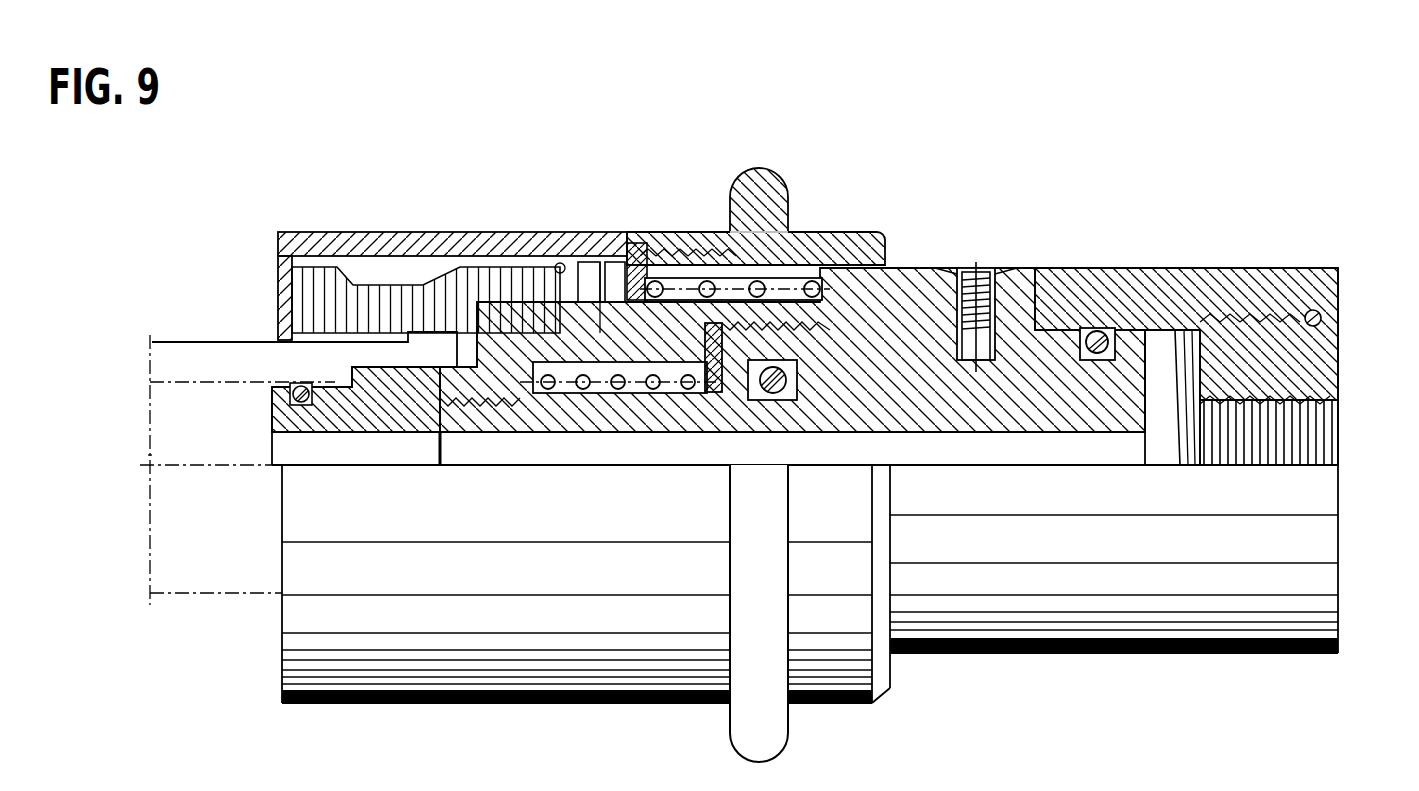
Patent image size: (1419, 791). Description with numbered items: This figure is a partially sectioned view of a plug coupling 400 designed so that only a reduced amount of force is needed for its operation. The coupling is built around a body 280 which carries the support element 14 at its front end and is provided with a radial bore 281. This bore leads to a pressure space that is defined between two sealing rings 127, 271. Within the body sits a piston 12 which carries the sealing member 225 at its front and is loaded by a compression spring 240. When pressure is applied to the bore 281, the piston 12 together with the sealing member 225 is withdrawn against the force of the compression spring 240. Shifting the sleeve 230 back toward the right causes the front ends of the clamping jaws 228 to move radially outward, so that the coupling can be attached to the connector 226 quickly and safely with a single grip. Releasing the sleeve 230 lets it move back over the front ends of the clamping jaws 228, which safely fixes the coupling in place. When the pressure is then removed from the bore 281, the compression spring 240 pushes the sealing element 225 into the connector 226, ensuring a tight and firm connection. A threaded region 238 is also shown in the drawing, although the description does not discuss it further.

The plug coupling 400 is at (413, 188).
The clamping jaws 228 is at (282, 275).
The support element 14 is at (607, 285).
The connector 226 is at (204, 360).
The sealing member 225 is at (382, 405).
The piston 12 is at (697, 405).
The compression spring 240 is at (590, 398).
The sealing ring 127 is at (775, 398).
The sleeve 230 is at (818, 237).
The threaded connection 238 is at (712, 280).
The radial bore 281 is at (968, 288).
The body 280 is at (1237, 300).
The sealing ring 271 is at (1103, 330).